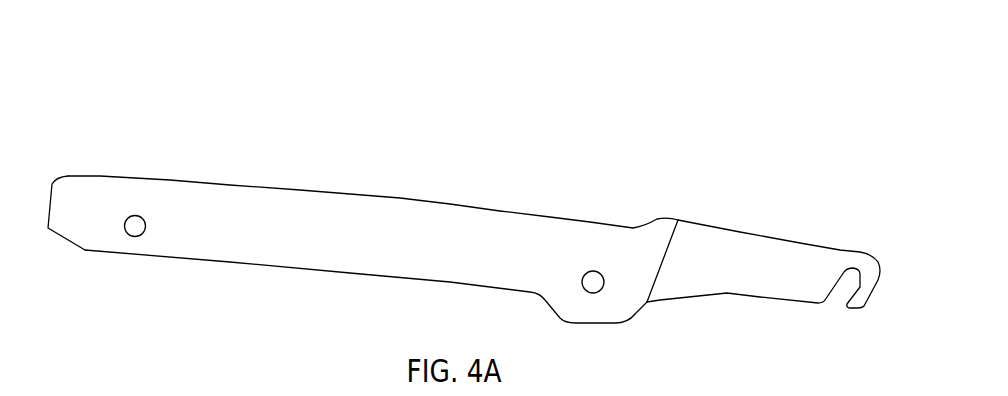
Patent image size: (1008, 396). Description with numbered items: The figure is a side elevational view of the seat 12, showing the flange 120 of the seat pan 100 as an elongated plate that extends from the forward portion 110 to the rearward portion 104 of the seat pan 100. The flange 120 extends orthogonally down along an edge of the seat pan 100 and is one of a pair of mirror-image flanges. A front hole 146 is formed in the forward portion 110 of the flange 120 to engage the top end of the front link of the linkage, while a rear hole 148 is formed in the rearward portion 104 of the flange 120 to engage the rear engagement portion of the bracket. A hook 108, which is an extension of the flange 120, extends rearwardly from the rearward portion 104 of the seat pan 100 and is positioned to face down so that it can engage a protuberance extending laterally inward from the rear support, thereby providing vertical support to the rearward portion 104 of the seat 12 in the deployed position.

The seat 12 is at (177, 128).
The seat pan 100 is at (310, 162).
The rearward portion 104 is at (657, 233).
The hook 108 is at (863, 263).
The forward portion 110 is at (57, 178).
The flange 120 is at (310, 240).
The front hole 146 is at (137, 228).
The rear hole 148 is at (593, 282).